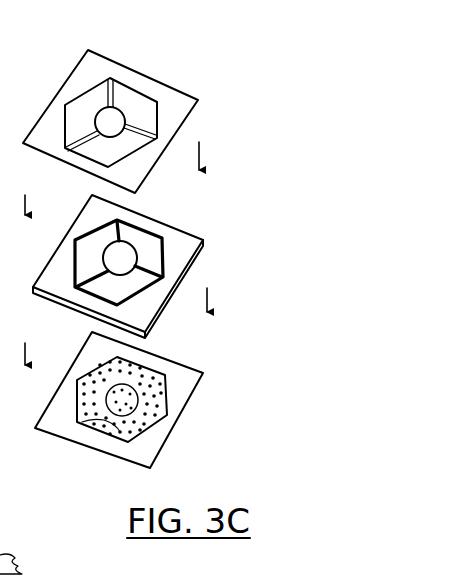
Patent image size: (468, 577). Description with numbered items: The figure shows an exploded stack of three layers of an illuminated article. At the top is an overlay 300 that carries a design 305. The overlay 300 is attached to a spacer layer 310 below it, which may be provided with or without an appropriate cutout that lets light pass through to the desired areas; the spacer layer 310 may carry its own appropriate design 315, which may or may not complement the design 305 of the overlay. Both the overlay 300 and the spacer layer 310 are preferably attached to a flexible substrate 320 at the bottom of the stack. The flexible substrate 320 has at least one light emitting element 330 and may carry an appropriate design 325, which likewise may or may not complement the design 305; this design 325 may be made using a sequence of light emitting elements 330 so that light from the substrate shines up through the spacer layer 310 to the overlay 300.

The overlay 300 is at (180, 80).
The design 305 is at (130, 88).
The spacer layer 310 is at (187, 230).
The design 315 is at (167, 257).
The flexible substrate 320 is at (160, 447).
The design 325 is at (110, 430).
The light emitting element 330 is at (150, 400).